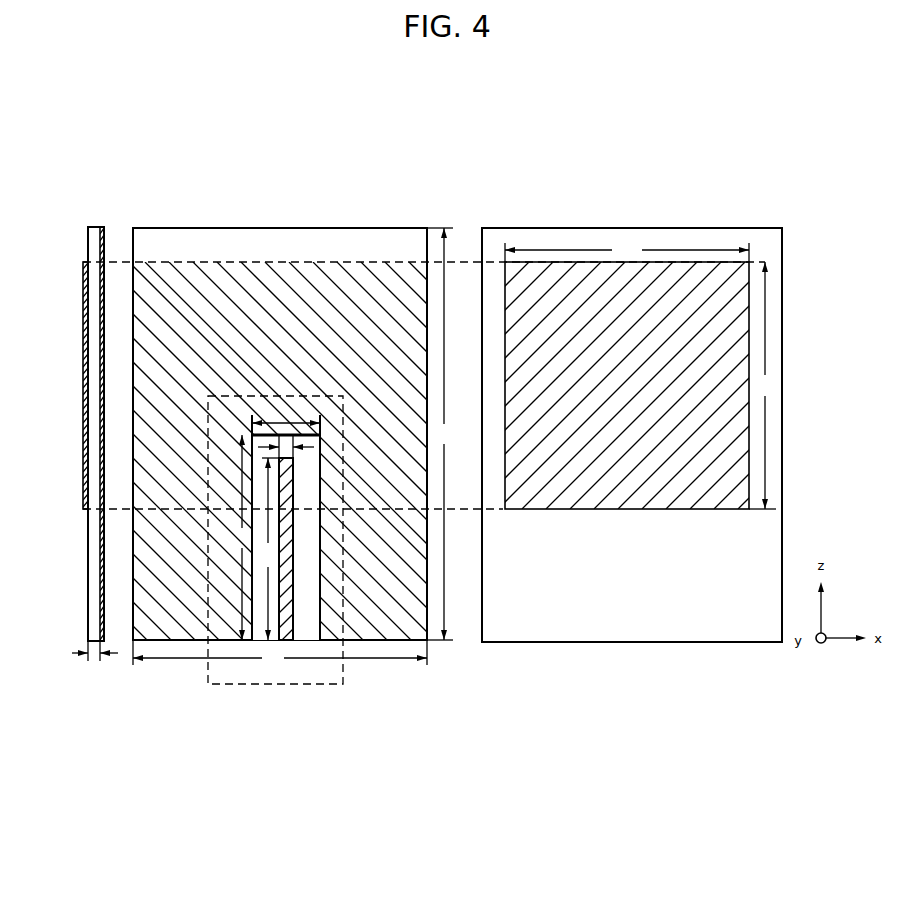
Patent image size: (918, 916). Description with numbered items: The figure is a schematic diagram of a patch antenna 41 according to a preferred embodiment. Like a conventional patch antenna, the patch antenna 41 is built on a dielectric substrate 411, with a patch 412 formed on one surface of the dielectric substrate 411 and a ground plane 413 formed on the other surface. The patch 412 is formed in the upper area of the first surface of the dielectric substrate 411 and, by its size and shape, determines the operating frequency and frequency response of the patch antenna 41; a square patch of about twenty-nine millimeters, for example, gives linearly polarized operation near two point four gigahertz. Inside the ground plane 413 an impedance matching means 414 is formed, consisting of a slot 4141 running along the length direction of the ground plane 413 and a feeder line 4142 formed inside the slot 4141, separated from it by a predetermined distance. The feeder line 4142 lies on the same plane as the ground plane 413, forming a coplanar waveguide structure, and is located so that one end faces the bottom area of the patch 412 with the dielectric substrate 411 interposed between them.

The patch antenna 41 is at (490, 104).
The dielectric substrate 411 is at (88, 576).
The patch 412 is at (578, 262).
The ground plane 413 is at (352, 238).
The impedance matching means 414 is at (238, 686).
The slot 4141 is at (310, 590).
The feeder line 4142 is at (288, 636).